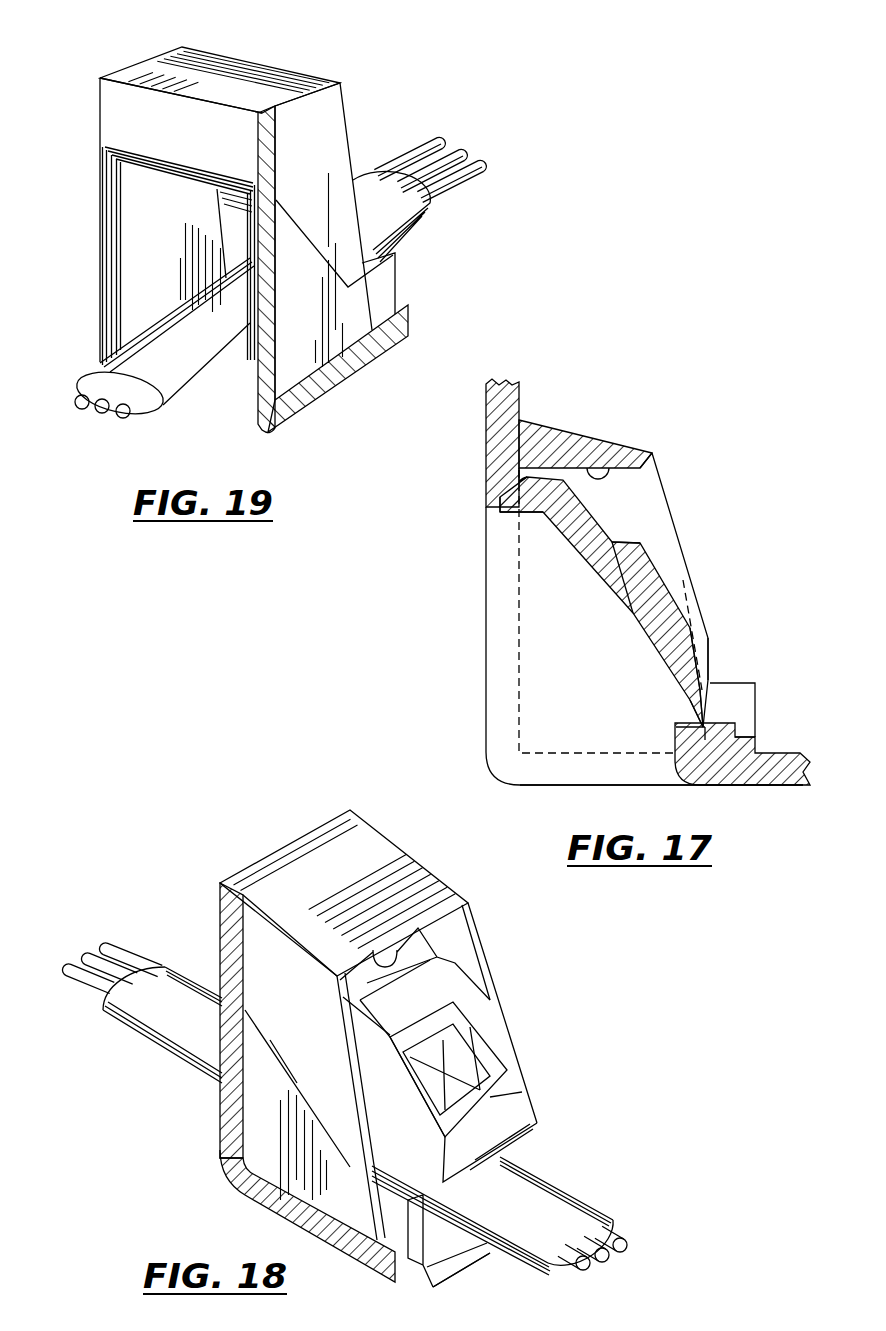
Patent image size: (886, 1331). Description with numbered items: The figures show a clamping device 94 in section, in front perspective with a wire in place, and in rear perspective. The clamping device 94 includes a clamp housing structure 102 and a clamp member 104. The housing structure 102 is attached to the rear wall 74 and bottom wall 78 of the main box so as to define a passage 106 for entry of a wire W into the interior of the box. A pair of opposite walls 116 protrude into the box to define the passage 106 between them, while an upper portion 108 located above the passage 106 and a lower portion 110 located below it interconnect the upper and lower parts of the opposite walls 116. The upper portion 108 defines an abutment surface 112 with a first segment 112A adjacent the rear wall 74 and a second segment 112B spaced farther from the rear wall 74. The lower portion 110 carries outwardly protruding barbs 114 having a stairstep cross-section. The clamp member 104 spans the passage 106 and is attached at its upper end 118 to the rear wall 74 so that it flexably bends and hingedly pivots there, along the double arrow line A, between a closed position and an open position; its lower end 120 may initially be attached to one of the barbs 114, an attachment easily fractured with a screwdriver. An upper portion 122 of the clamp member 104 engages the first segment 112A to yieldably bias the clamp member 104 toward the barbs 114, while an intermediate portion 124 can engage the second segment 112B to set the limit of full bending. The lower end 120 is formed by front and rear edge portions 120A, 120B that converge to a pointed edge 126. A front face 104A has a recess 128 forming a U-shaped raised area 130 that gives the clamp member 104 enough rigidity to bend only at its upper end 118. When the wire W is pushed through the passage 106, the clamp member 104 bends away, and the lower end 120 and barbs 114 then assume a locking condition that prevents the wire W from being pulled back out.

In FIG. 19, the rear wall 74 is at (108, 72).
In FIG. 17, the rear wall 74 is at (490, 441).
In FIG. 18, the rear wall 74 is at (230, 1132).
In FIG. 19, the bottom wall 78 is at (343, 377).
In FIG. 17, the bottom wall 78 is at (590, 788).
In FIG. 18, the bottom wall 78 is at (287, 1213).
In FIG. 19, the clamping device 94 is at (259, 225).
In FIG. 17, the clamping device 94 is at (629, 576).
In FIG. 18, the clamping device 94 is at (345, 1044).
In FIG. 19, the clamp housing structure 102 is at (363, 100).
In FIG. 17, the clamp housing structure 102 is at (678, 477).
In FIG. 18, the clamp housing structure 102 is at (489, 949).
In FIG. 19, the clamp member 104 is at (205, 196).
In FIG. 17, the clamp member 104 is at (670, 561).
In FIG. 18, the clamp member 104 is at (509, 1034).
In FIG. 17, the front face 104A is at (622, 577).
In FIG. 18, the front face 104A is at (387, 1018).
In FIG. 19, the passage 106 is at (148, 276).
In FIG. 17, the passage 106 is at (565, 634).
In FIG. 18, the passage 106 is at (388, 1152).
In FIG. 19, the upper portion 108 is at (205, 68).
In FIG. 17, the upper portion 108 is at (560, 427).
In FIG. 18, the upper portion 108 is at (357, 855).
In FIG. 19, the lower portion 110 is at (245, 355).
In FIG. 17, the lower portion 110 is at (675, 745).
In FIG. 18, the lower portion 110 is at (432, 1260).
In FIG. 17, the abutment surface 112 is at (612, 466).
In FIG. 17, the first segment 112A is at (528, 488).
In FIG. 17, the second segment 112B is at (657, 465).
In FIG. 18, the second segment 112B is at (398, 940).
In FIG. 17, the barbs 114 is at (723, 742).
In FIG. 18, the barbs 114 is at (440, 1210).
In FIG. 19, the opposite walls 116 is at (315, 152).
In FIG. 17, the opposite walls 116 is at (625, 498).
In FIG. 18, the opposite walls 116 is at (267, 957).
In FIG. 17, the upper end 118 is at (538, 518).
In FIG. 17, the lower end 120 is at (697, 722).
In FIG. 18, the lower end 120 is at (525, 1116).
In FIG. 17, the front edge portion 120A is at (710, 720).
In FIG. 17, the rear edge portion 120B is at (690, 697).
In FIG. 17, the upper portion 122 is at (538, 511).
In FIG. 17, the intermediate portion 124 is at (626, 540).
In FIG. 18, the intermediate portion 124 is at (420, 972).
In FIG. 17, the pointed edge 126 is at (712, 718).
In FIG. 17, the recess 128 is at (705, 655).
In FIG. 18, the recess 128 is at (490, 1096).
In FIG. 17, the U-shaped raised area 130 is at (693, 622).
In FIG. 18, the U-shaped raised area 130 is at (400, 1073).
In FIG. 19, the wire W is at (118, 372).
In FIG. 18, the wire W is at (538, 1195).
In FIG. 17, the double arrow line A is at (812, 585).